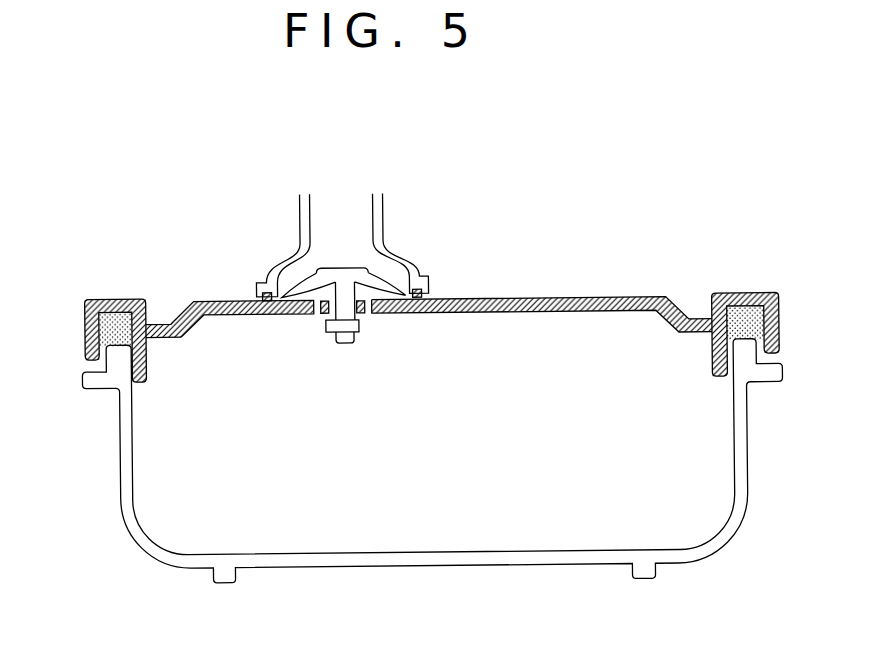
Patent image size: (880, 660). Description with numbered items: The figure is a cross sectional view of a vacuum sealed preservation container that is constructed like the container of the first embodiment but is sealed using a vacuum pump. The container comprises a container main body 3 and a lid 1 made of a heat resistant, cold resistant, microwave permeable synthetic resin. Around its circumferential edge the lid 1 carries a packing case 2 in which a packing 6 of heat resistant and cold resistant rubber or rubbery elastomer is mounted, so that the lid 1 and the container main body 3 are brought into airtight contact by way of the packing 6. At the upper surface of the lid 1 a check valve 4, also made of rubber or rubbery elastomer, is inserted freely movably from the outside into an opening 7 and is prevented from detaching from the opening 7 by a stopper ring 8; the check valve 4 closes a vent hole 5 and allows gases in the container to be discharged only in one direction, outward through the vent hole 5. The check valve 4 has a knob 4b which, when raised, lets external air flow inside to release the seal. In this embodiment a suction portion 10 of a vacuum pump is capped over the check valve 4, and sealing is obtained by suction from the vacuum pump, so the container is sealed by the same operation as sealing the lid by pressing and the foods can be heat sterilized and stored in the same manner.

The lid 1 is at (565, 298).
The packing case 2 is at (113, 300).
The container main body 3 is at (137, 478).
The check valve 4 is at (350, 264).
The knob 4b is at (402, 271).
The vent hole 5 is at (320, 317).
The packing 6 is at (140, 300).
The opening 7 is at (360, 321).
The stopper ring 8 is at (363, 323).
The suction portion 10 is at (385, 220).